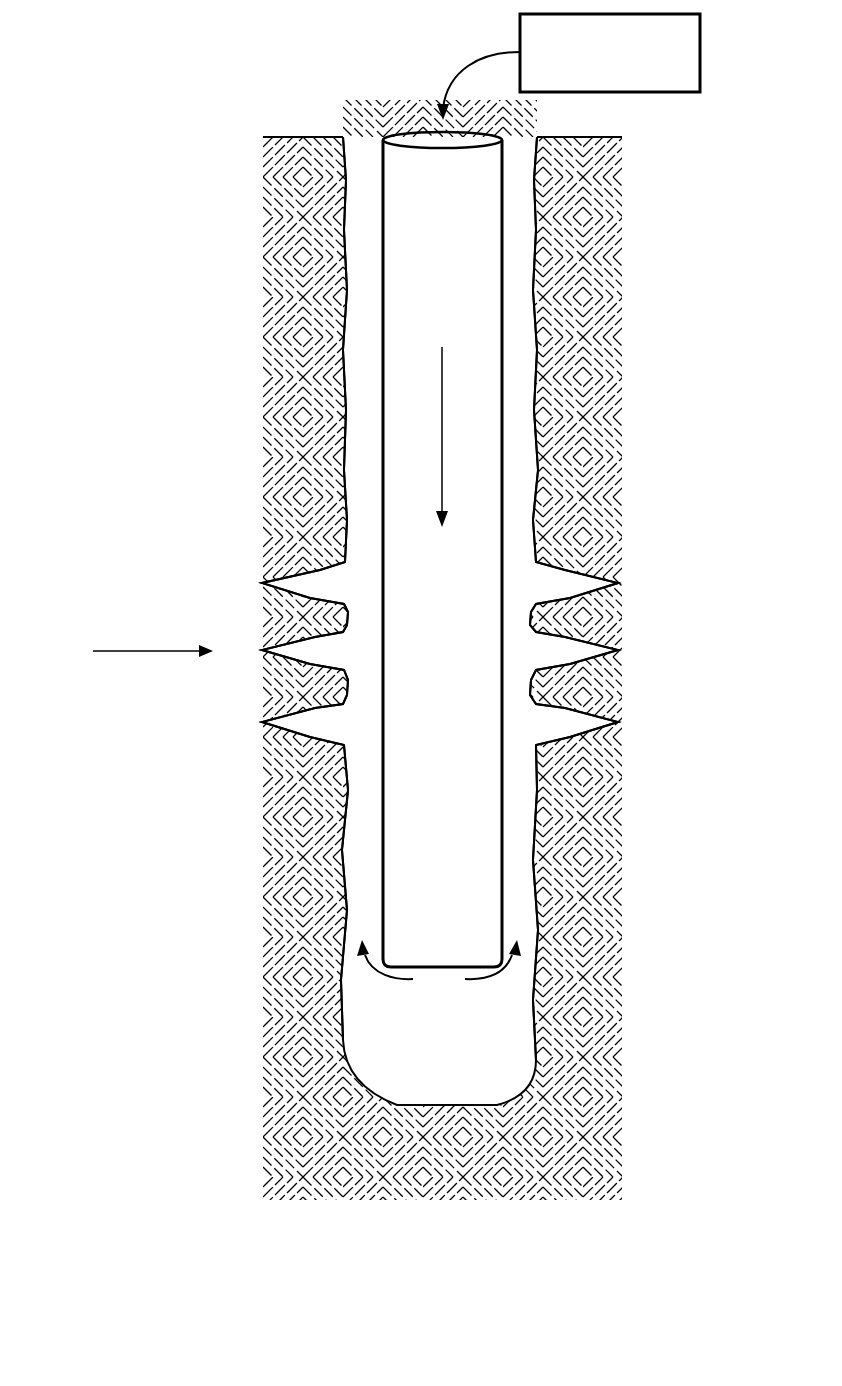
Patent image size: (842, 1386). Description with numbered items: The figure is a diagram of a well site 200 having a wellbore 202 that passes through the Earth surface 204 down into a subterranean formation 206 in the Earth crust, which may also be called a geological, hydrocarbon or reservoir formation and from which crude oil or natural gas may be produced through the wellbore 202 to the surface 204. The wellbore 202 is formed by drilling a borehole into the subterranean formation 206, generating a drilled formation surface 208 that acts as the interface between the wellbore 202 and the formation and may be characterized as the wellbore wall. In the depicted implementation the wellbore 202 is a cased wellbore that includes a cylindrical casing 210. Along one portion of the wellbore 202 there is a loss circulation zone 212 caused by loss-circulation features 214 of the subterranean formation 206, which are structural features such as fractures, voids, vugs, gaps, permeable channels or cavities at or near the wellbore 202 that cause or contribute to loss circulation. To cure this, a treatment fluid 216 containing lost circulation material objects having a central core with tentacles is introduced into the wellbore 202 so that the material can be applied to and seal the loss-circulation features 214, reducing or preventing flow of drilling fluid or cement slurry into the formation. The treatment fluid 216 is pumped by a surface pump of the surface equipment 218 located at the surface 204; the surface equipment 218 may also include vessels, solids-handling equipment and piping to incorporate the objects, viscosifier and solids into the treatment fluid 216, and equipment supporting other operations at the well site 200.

The well site 200 is at (463, 1304).
The wellbore 202 is at (522, 533).
The Earth surface 204 is at (296, 136).
The subterranean formation 206 is at (291, 239).
The drilled formation surface 208 is at (343, 348).
The cylindrical casing 210 is at (502, 343).
The loss circulation zone 212 is at (125, 652).
The loss-circulation features 214 is at (603, 630).
The treatment fluid 216 is at (468, 65).
The surface equipment 218 is at (632, 64).